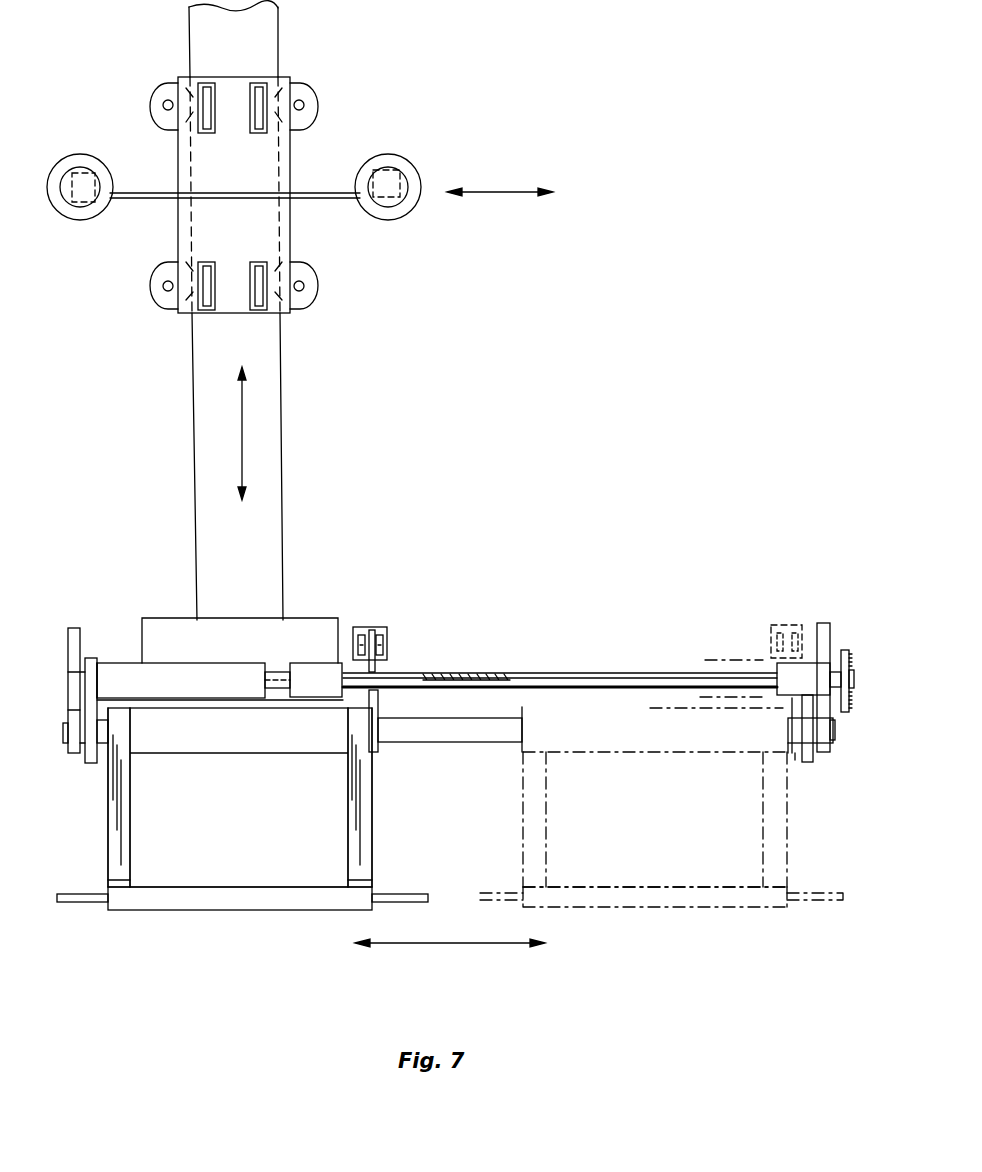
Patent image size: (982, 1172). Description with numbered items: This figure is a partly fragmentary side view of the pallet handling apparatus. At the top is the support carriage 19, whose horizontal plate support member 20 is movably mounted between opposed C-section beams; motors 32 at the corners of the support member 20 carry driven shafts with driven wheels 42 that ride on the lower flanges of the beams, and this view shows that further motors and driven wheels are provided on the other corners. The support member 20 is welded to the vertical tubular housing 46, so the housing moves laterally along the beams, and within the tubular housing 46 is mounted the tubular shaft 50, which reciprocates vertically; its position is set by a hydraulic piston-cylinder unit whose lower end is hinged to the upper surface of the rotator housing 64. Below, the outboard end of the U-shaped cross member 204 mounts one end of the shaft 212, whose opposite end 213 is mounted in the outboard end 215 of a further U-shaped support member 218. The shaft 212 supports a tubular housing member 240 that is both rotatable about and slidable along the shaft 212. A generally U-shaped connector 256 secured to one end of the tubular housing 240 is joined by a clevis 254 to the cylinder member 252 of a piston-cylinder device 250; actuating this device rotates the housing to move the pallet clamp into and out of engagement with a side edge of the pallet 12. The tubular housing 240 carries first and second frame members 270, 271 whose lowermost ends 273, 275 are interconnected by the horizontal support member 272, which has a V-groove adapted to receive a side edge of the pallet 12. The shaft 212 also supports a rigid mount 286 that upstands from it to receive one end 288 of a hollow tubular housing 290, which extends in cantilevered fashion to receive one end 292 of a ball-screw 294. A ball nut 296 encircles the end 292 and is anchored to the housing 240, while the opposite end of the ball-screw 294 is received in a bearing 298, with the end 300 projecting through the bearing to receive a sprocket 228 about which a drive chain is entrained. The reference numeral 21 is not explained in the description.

The pallet 12 is at (405, 894).
The support carriage 19 is at (147, 200).
The horizontal plate support member 20 is at (71, 220).
The roller 21 is at (405, 206).
The motor 32 is at (98, 175).
The driven wheel 42 is at (86, 156).
The vertical tubular housing 46 is at (286, 152).
The tubular shaft 50 is at (263, 368).
The rotator housing 64 is at (303, 620).
The U-shaped cross member 204 is at (72, 655).
The shaft 212 is at (63, 738).
The opposite end of shaft 213 is at (795, 755).
The outboard end of U-shaped support member 215 is at (834, 748).
The U-shaped support member 218 is at (829, 627).
The sprocket 228 is at (851, 700).
The tubular housing member 240 is at (268, 755).
The piston-cylinder device 250 is at (390, 636).
The cylinder member 252 is at (388, 628).
The clevis 254 is at (384, 650).
The U-shaped connector 256 is at (380, 668).
The first frame member 270 is at (123, 818).
The second frame member 271 is at (363, 806).
The horizontal support member 272 is at (252, 887).
The lowermost end of first frame member 273 is at (125, 882).
The lowermost end of second frame member 275 is at (365, 880).
The rigid mount 286 is at (90, 656).
The end of hollow tubular housing 288 is at (104, 666).
The hollow tubular housing 290 is at (166, 663).
The end of ball-screw 292 is at (277, 670).
The ball-screw 294 is at (524, 675).
The ball nut 296 is at (335, 648).
The bearing 298 is at (808, 660).
The end of ball-screw 300 is at (848, 662).